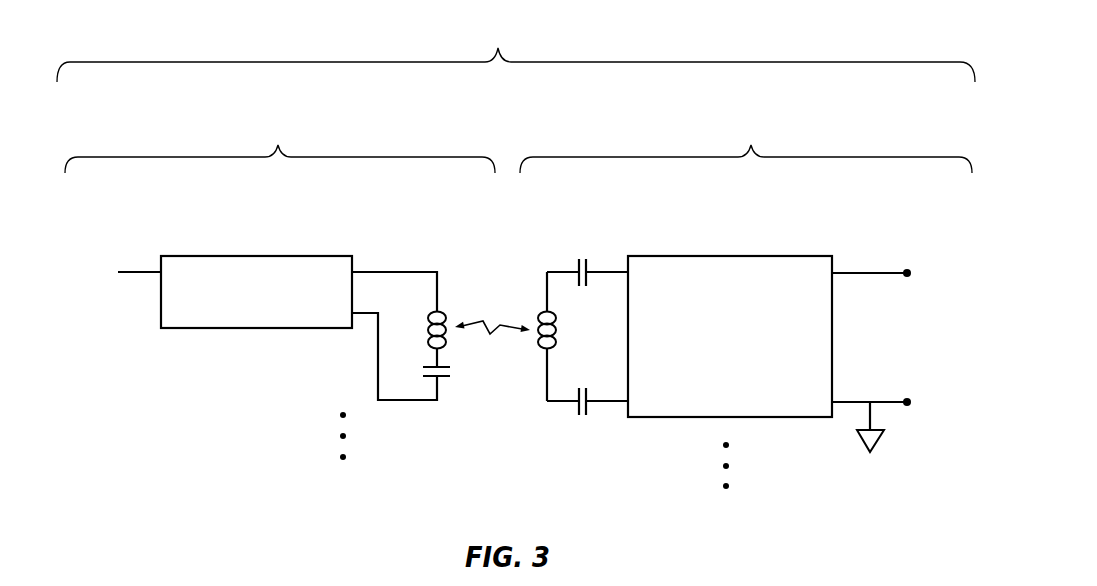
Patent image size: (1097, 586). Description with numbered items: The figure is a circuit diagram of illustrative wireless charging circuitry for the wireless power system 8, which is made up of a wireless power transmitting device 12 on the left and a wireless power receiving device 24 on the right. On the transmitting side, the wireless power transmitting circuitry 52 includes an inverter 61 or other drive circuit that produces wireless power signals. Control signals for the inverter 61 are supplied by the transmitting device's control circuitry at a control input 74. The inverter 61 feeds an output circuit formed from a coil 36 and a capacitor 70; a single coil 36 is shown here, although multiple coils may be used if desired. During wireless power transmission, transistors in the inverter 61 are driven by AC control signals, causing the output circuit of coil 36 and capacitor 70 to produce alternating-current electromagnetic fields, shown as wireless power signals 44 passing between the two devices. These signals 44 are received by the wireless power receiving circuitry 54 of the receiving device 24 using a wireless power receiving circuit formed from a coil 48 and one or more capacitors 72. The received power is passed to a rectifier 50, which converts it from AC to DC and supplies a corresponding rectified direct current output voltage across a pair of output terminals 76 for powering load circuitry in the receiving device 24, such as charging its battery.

The wireless power system 8 is at (516, 53).
The wireless power transmitting device 12 is at (280, 147).
The wireless power receiving device 24 is at (746, 147).
The control input 74 is at (136, 270).
The inverter 61 is at (263, 256).
The coil 36 is at (452, 303).
The capacitor 70 is at (460, 388).
The wireless power transmitting circuitry 52 is at (298, 390).
The wireless power signals 44 is at (494, 320).
The coil 48 is at (529, 356).
The capacitors 72 is at (585, 238).
The rectifier 50 is at (733, 256).
The wireless power receiving circuitry 54 is at (668, 473).
The output terminals 76 is at (909, 276).